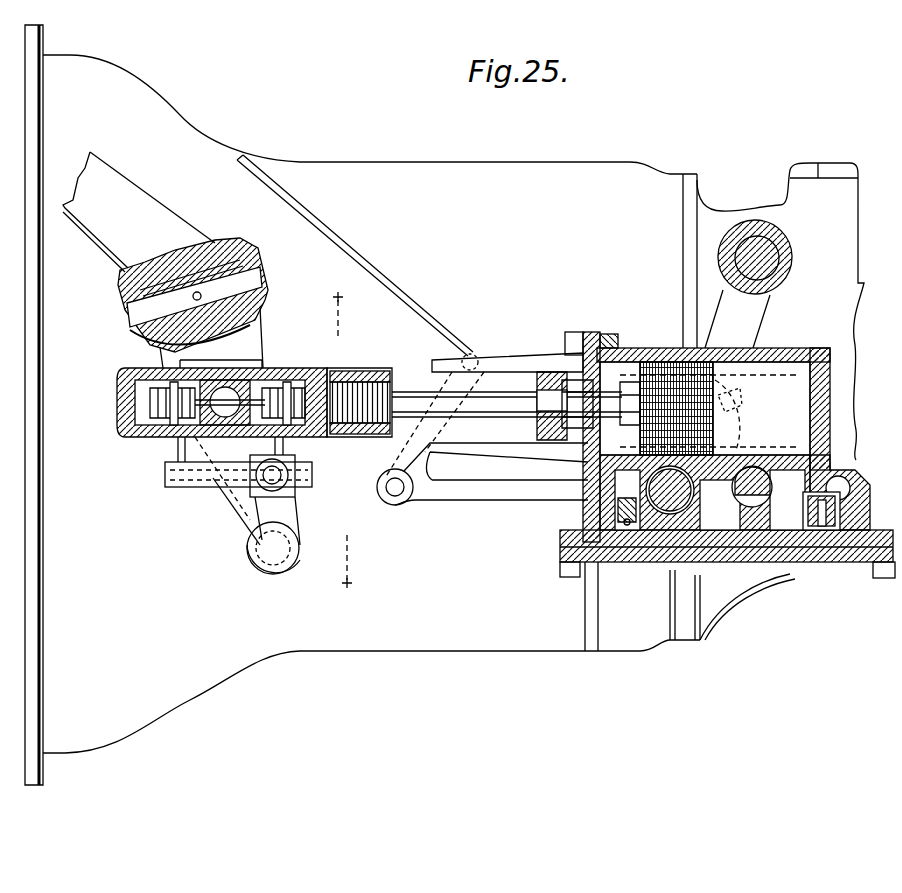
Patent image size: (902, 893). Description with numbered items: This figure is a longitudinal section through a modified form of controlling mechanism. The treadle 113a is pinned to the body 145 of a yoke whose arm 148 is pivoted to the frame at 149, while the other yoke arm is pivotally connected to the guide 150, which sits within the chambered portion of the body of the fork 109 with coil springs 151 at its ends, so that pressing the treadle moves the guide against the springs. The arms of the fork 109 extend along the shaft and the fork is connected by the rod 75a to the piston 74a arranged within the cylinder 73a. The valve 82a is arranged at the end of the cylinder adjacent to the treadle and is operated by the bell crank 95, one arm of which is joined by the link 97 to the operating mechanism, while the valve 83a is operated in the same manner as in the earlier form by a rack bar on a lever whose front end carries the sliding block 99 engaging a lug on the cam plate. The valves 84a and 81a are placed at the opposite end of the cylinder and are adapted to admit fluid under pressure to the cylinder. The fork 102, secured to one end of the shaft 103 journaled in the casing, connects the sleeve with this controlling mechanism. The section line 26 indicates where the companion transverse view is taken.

The treadle 113a is at (138, 197).
The link 97 is at (322, 237).
The section line 26 is at (342, 441).
The yoke body 145 is at (165, 354).
The coil springs 151 is at (140, 412).
The guide 150 is at (175, 440).
The yoke arm 148 is at (228, 500).
The sliding block 99 is at (228, 525).
The pivot 149 is at (255, 558).
The fork 109 is at (400, 374).
The rod 75a is at (492, 398).
The piston 74a is at (650, 358).
The cylinder 73a is at (818, 407).
The bell crank lever 95 is at (486, 490).
The valve 84a is at (560, 518).
The valve 82a is at (670, 500).
The valve 83a is at (752, 500).
The valve 81a is at (833, 490).
The shaft 103 is at (775, 235).
The fork 102 is at (752, 333).